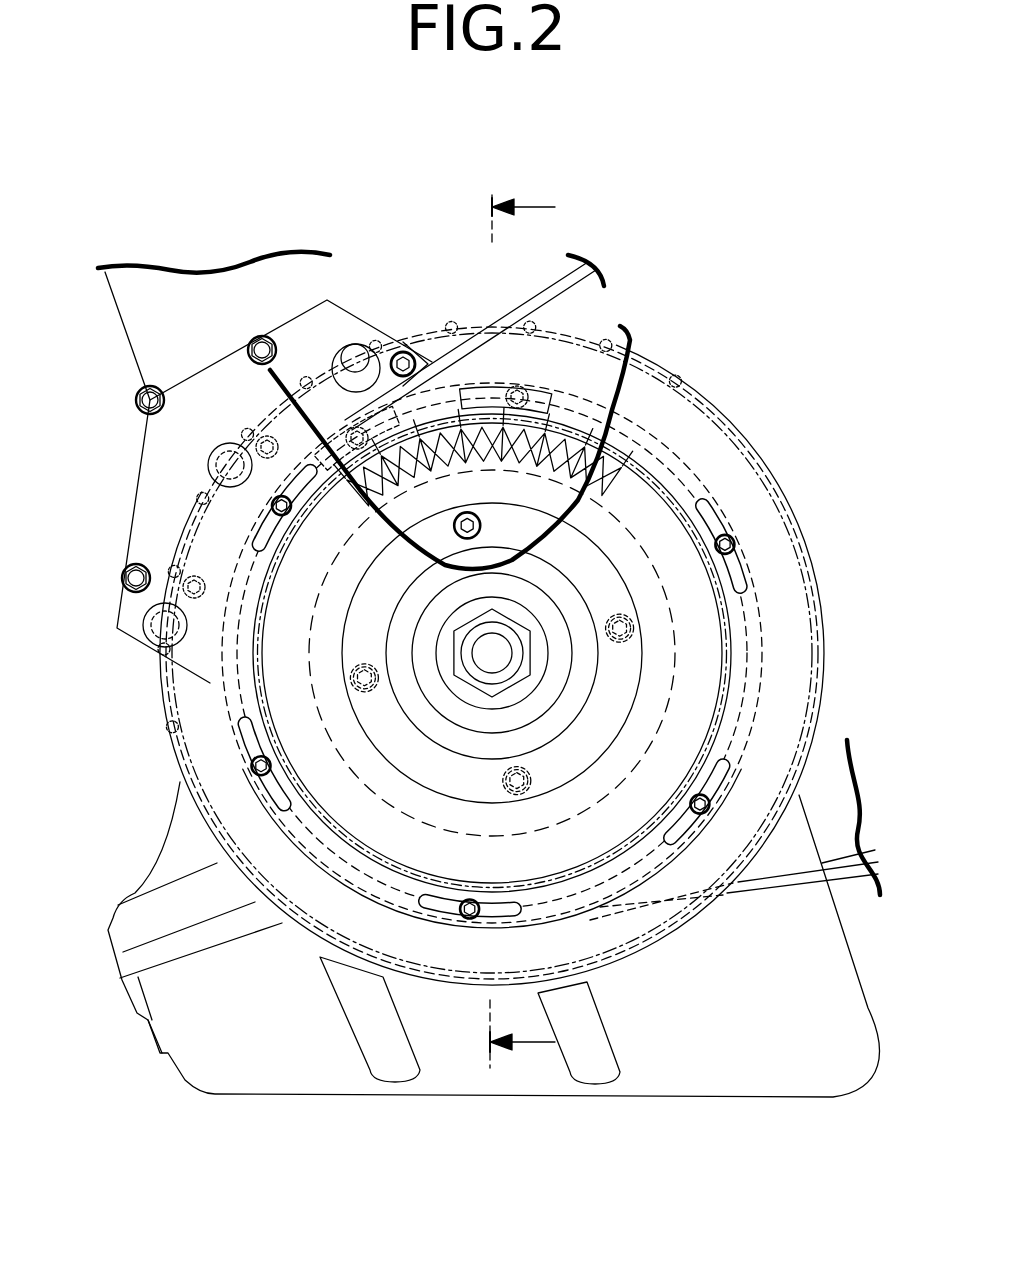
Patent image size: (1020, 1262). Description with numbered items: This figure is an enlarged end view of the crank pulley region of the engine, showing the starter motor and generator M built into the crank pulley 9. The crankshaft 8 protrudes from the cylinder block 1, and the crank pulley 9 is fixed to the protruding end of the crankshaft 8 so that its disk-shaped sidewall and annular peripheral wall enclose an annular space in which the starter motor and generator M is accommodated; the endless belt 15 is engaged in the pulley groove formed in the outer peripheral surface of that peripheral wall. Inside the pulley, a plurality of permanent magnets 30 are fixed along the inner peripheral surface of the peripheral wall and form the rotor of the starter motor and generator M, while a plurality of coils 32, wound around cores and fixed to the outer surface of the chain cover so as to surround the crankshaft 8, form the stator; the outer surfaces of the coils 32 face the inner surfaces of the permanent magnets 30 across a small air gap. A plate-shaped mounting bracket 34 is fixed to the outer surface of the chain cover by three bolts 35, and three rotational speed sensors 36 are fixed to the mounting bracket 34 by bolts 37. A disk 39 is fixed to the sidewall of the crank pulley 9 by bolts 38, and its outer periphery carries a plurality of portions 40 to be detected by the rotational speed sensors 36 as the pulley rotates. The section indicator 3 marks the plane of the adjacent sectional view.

The cylinder block 1 is at (150, 312).
The section line III-III 3 is at (522, 629).
The crankshaft 8 is at (500, 650).
The crank pulley 9 is at (772, 468).
The endless belt 15 is at (545, 305).
The permanent magnets 30 is at (474, 398).
The coils 32 is at (356, 508).
The mounting bracket 34 is at (135, 510).
The bolts 35 is at (262, 345).
The rotational speed sensors 36 is at (352, 368).
The bolts 37 is at (404, 352).
The bolts 38 is at (258, 775).
The disk 39 is at (792, 622).
The portions to be detected 40 is at (450, 322).
The starter motor and generator M is at (150, 767).